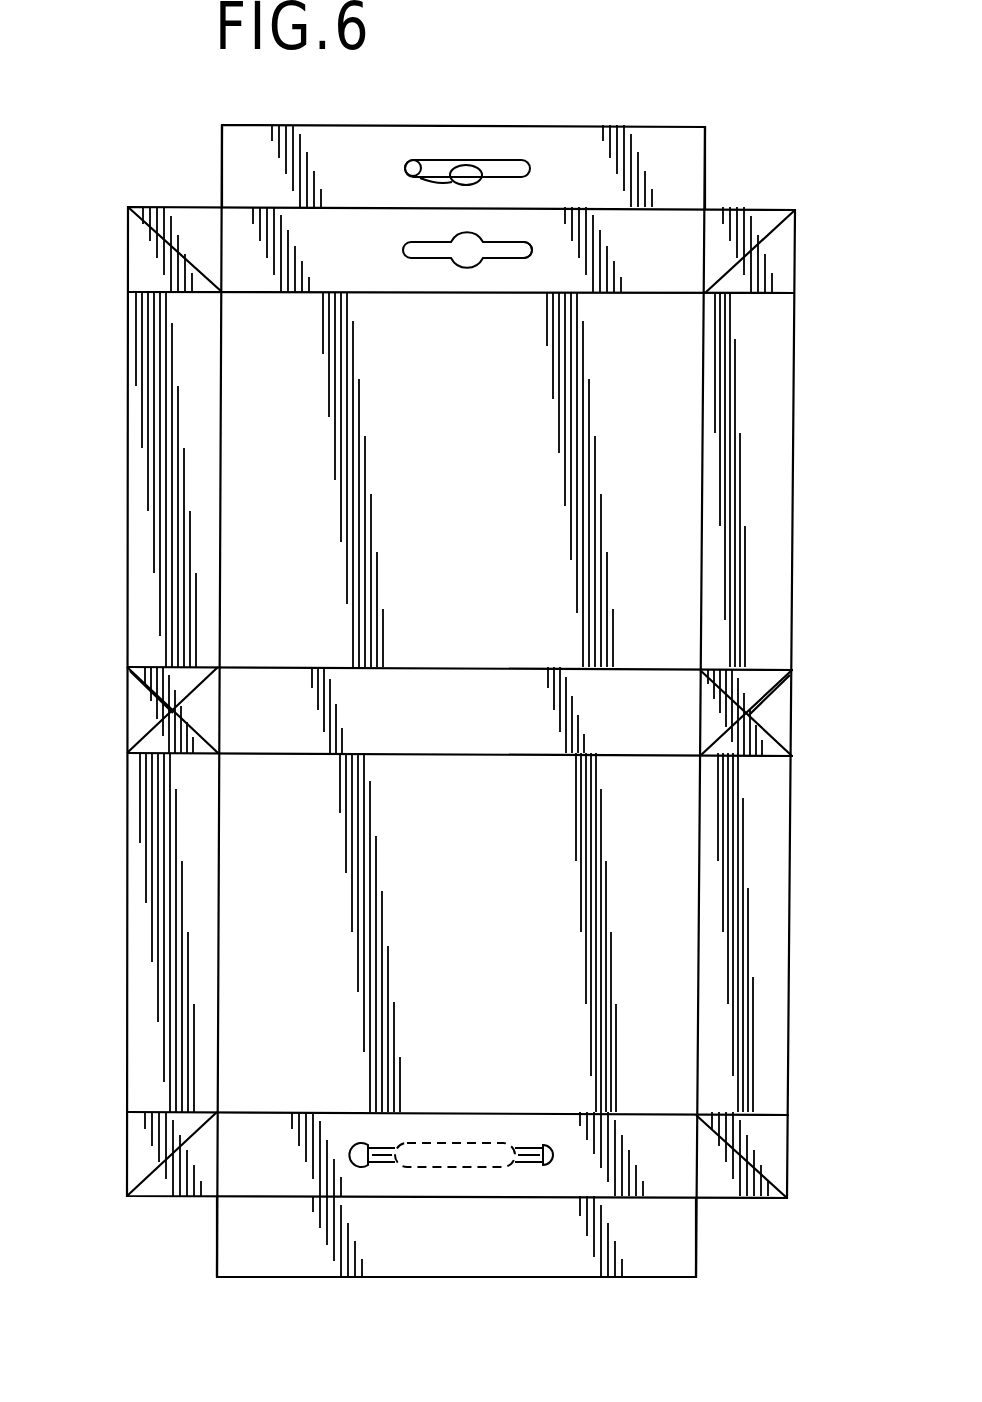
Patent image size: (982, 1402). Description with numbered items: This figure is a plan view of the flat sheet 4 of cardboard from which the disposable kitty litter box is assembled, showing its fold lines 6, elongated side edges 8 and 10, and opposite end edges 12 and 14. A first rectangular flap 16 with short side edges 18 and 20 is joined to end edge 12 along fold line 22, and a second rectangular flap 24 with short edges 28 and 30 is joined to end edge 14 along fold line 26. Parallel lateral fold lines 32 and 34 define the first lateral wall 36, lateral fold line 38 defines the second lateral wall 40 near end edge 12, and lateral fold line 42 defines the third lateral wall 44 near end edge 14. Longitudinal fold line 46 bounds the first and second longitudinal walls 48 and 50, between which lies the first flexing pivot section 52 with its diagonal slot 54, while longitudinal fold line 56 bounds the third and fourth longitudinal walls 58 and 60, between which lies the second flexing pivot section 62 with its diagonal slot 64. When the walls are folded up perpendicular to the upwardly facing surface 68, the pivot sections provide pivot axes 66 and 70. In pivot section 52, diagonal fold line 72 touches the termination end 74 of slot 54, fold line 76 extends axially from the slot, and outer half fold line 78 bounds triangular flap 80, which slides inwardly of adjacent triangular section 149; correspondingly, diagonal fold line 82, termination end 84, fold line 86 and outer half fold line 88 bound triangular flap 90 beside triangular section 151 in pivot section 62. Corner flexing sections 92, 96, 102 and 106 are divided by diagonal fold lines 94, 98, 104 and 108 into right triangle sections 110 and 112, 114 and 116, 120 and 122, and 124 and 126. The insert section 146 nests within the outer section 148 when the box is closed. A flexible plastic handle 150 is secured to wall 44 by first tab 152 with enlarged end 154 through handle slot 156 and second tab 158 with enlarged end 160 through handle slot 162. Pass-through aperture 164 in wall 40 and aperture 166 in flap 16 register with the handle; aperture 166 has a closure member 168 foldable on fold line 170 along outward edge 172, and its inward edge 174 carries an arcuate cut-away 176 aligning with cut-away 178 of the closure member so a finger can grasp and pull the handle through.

The flat sheet 4 is at (789, 1038).
The fold lines 6 is at (385, 755).
The side edge 8 is at (127, 552).
The side edge 10 is at (793, 563).
The end edge 12 is at (172, 205).
The end edge 14 is at (143, 1199).
The first rectangular flap 16 is at (388, 135).
The short side edge 18 is at (222, 143).
The short side edge 20 is at (707, 140).
The fold line 22 is at (600, 205).
The second rectangular flap 24 is at (605, 1266).
The fold line 26 is at (320, 1198).
The short edge 28 is at (217, 1233).
The short edge 30 is at (697, 1255).
The lateral fold line 32 is at (448, 668).
The lateral fold line 34 is at (498, 760).
The first rectangular foldable lateral wall 36 is at (630, 745).
The lateral fold line 38 is at (470, 336).
The second rectangular foldable lateral wall 40 is at (533, 272).
The lateral fold line 42 is at (470, 1113).
The third rectangular foldable lateral wall 44 is at (534, 1138).
The longitudinal fold line 46 is at (222, 459).
The first rectangular foldable longitudinal wall 48 is at (185, 400).
The second rectangular foldable longitudinal wall 50 is at (188, 903).
The first flexing pivot section 52 is at (120, 732).
The diagonal slot 54 is at (125, 670).
The longitudinal fold line 56 is at (700, 555).
The third rectangular foldable longitudinal wall 58 is at (735, 494).
The fourth rectangular foldable longitudinal wall 60 is at (725, 872).
The second flexing pivot section 62 is at (790, 743).
The diagonal slot 64 is at (790, 676).
The first pivot axis 66 is at (176, 712).
The upwardly facing surface 68 is at (265, 1010).
The second pivot axis 70 is at (745, 712).
The diagonal fold line 72 is at (196, 690).
The inward termination end 74 is at (170, 712).
The diagonal fold line 76 is at (185, 740).
The outer half fold line 78 is at (153, 730).
The triangular foldable flap 80 is at (140, 715).
The diagonal fold line 82 is at (718, 682).
The inward termination end 84 is at (752, 700).
The diagonal fold line 86 is at (720, 760).
The outer half fold line 88 is at (762, 740).
The triangular foldable flap 90 is at (775, 718).
The first corner flexing section 92 is at (127, 272).
The diagonal fold line 94 is at (188, 278).
The second corner flexing section 96 is at (127, 1133).
The diagonal fold line 98 is at (150, 1168).
The third corner flexing section 102 is at (795, 280).
The diagonal fold line 104 is at (735, 270).
The fourth corner flexing section 106 is at (787, 1122).
The diagonal fold line 108 is at (745, 1157).
The right triangle section 110 is at (143, 243).
The right triangle section 112 is at (198, 233).
The right triangle section 114 is at (183, 1125).
The right triangle section 116 is at (200, 1150).
The right triangle section 120 is at (775, 258).
The right triangle section 122 is at (728, 226).
The right triangle section 124 is at (745, 1130).
The right triangle section 126 is at (713, 1138).
The insert section 146 is at (668, 1000).
The outer section 148 is at (262, 507).
The triangular section 149 is at (148, 672).
The flexible plastic handle 150 is at (452, 1160).
The triangular section 151 is at (770, 678).
The first tab 152 is at (380, 1148).
The enlarged end 154 is at (370, 1146).
The handle slot 156 is at (390, 1150).
The second tab 158 is at (542, 1168).
The enlarged end 160 is at (560, 1163).
The handle slot 162 is at (522, 1165).
The pass-through aperture 164 is at (445, 265).
The aperture 166 is at (417, 160).
The closure member 168 is at (455, 162).
The fold line 170 is at (487, 163).
The outward elongated edge 172 is at (440, 160).
The inward edge 174 is at (408, 172).
The arcuate cut-away portion 176 is at (445, 190).
The arcuate cut-away portion 178 is at (480, 184).